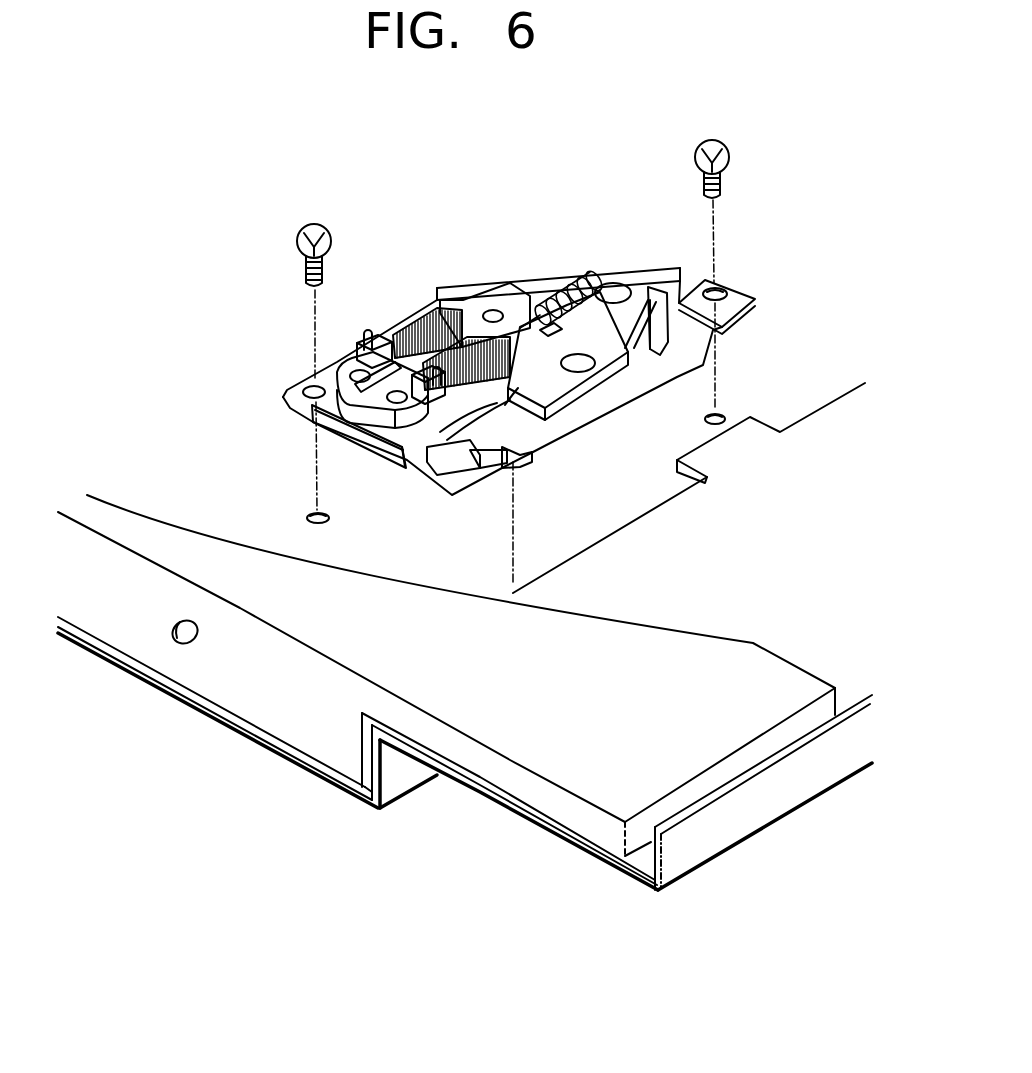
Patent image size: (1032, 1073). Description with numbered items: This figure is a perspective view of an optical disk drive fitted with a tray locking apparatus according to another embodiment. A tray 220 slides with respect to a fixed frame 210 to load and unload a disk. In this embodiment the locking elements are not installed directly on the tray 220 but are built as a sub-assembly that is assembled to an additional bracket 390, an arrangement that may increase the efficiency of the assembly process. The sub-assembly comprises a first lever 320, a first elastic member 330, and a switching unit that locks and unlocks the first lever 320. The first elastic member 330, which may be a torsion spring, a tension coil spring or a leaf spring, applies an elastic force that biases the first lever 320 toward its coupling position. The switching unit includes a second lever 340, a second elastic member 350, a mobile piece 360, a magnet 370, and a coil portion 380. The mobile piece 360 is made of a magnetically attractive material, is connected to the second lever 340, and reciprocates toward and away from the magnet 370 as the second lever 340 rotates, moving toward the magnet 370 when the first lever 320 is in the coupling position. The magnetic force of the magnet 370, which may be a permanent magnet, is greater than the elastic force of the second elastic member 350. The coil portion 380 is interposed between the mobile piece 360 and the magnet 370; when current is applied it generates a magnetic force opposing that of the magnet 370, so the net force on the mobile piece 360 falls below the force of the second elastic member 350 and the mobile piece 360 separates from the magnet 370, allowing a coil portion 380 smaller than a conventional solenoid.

The fixed frame 210 is at (757, 823).
The tray 220 is at (300, 735).
The first lever 320 is at (650, 335).
The first elastic member 330 is at (505, 405).
The second lever 340 is at (588, 335).
The second elastic member 350 is at (562, 290).
The mobile piece 360 is at (492, 300).
The magnet 370 is at (345, 352).
The coil portion 380 is at (417, 312).
The bracket 390 is at (736, 302).